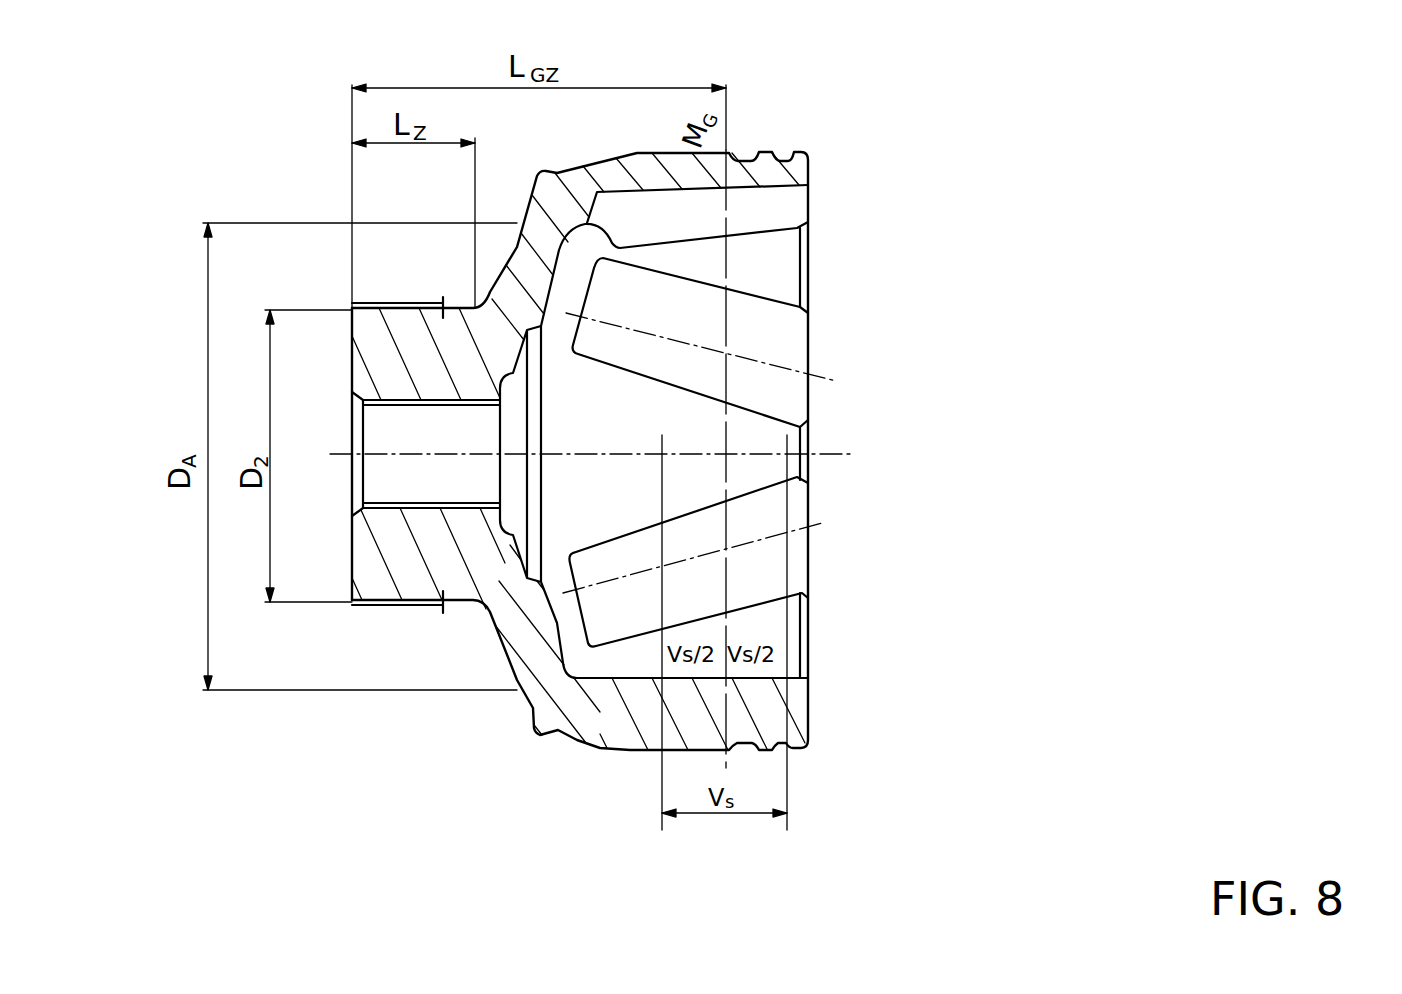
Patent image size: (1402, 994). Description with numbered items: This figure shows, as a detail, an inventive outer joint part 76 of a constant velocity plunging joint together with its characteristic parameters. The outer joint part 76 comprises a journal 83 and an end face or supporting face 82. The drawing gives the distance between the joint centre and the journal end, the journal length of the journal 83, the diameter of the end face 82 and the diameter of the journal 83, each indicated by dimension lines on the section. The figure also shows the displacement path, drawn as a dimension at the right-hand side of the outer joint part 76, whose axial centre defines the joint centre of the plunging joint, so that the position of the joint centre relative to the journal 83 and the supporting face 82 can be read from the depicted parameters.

The outer joint part 76 is at (752, 139).
The end face or supporting face 82 is at (540, 718).
The journal 83 is at (402, 572).